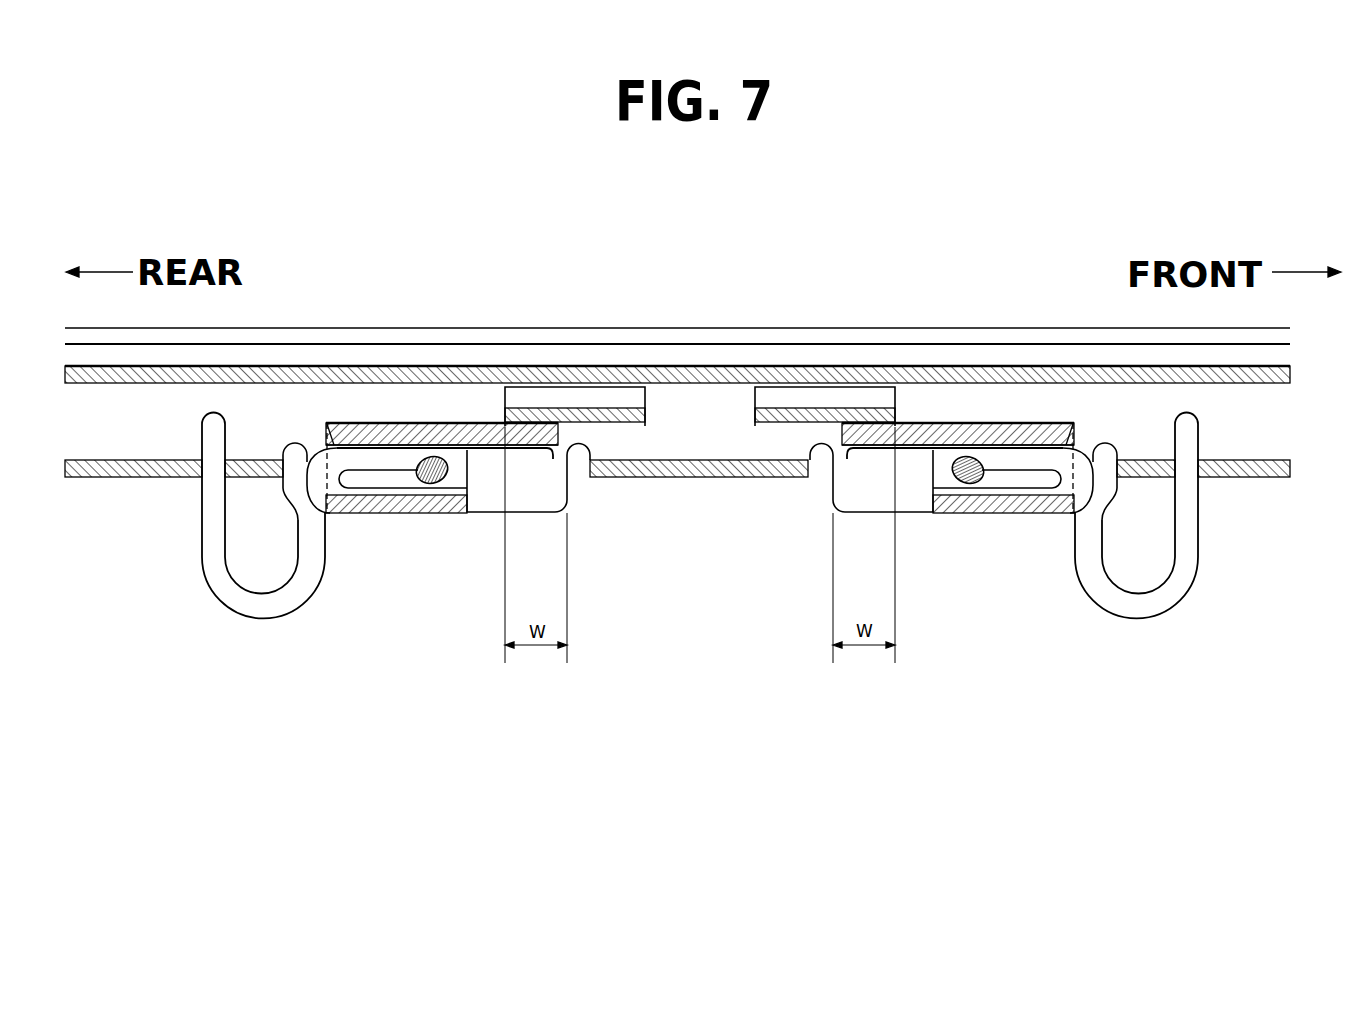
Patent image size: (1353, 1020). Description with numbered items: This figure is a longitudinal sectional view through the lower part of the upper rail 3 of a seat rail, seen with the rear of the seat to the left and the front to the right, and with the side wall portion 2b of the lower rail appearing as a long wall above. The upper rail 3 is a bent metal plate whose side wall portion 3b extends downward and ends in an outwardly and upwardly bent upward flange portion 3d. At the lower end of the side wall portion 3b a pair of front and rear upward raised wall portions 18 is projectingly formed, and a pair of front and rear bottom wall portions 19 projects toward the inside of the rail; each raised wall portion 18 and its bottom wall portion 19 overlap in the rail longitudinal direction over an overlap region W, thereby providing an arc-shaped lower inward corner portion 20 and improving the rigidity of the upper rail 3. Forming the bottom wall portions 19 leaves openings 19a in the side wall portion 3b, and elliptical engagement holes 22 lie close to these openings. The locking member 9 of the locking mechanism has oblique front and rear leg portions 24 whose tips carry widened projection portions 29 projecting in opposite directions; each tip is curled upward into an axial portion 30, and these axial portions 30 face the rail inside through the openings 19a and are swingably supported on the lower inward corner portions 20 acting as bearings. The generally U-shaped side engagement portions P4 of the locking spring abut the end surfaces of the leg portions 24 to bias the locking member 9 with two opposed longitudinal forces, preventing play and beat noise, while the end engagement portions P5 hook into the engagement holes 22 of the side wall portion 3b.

The side wall portion 2b is at (327, 328).
The upper rail 3 is at (1063, 366).
The side wall portion 3b is at (645, 478).
The upward flange portion 3d is at (993, 366).
The locking member 9 is at (926, 416).
The raised wall portion 18 is at (590, 408).
The bottom wall portion 19 is at (492, 486).
The opening 19a is at (300, 492).
The lower inward corner portion 20 is at (525, 452).
The engagement hole 22 is at (202, 522).
The leg portion 24 is at (413, 518).
The projection portion 29 is at (524, 408).
The axial portion 30 is at (410, 423).
The side engagement portion P4 is at (326, 540).
The end engagement portion P5 is at (215, 428).